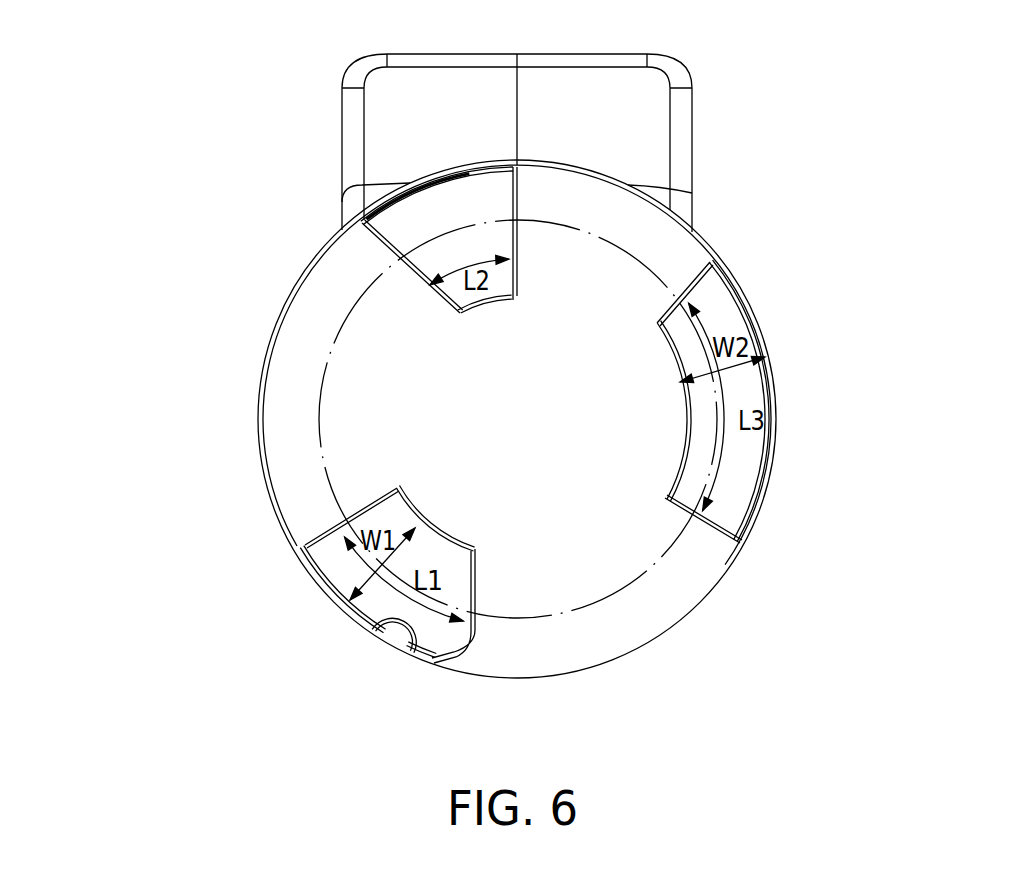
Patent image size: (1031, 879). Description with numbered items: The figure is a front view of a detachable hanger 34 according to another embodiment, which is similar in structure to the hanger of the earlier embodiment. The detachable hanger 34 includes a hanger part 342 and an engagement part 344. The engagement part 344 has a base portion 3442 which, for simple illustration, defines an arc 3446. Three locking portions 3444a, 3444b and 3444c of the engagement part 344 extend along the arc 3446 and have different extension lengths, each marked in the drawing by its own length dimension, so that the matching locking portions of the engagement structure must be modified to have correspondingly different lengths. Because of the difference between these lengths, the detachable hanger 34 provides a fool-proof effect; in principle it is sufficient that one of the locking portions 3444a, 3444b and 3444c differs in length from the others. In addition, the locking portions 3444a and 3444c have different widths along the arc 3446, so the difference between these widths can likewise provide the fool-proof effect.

The detachable hanger 34 is at (868, 130).
The hanger part 342 is at (643, 133).
The base portion 3442 is at (292, 330).
The engagement part 344 is at (714, 245).
The locking portion 3444a is at (338, 571).
The locking portion 3444b is at (410, 223).
The locking portion 3444c is at (735, 507).
The arc 3446 is at (673, 547).